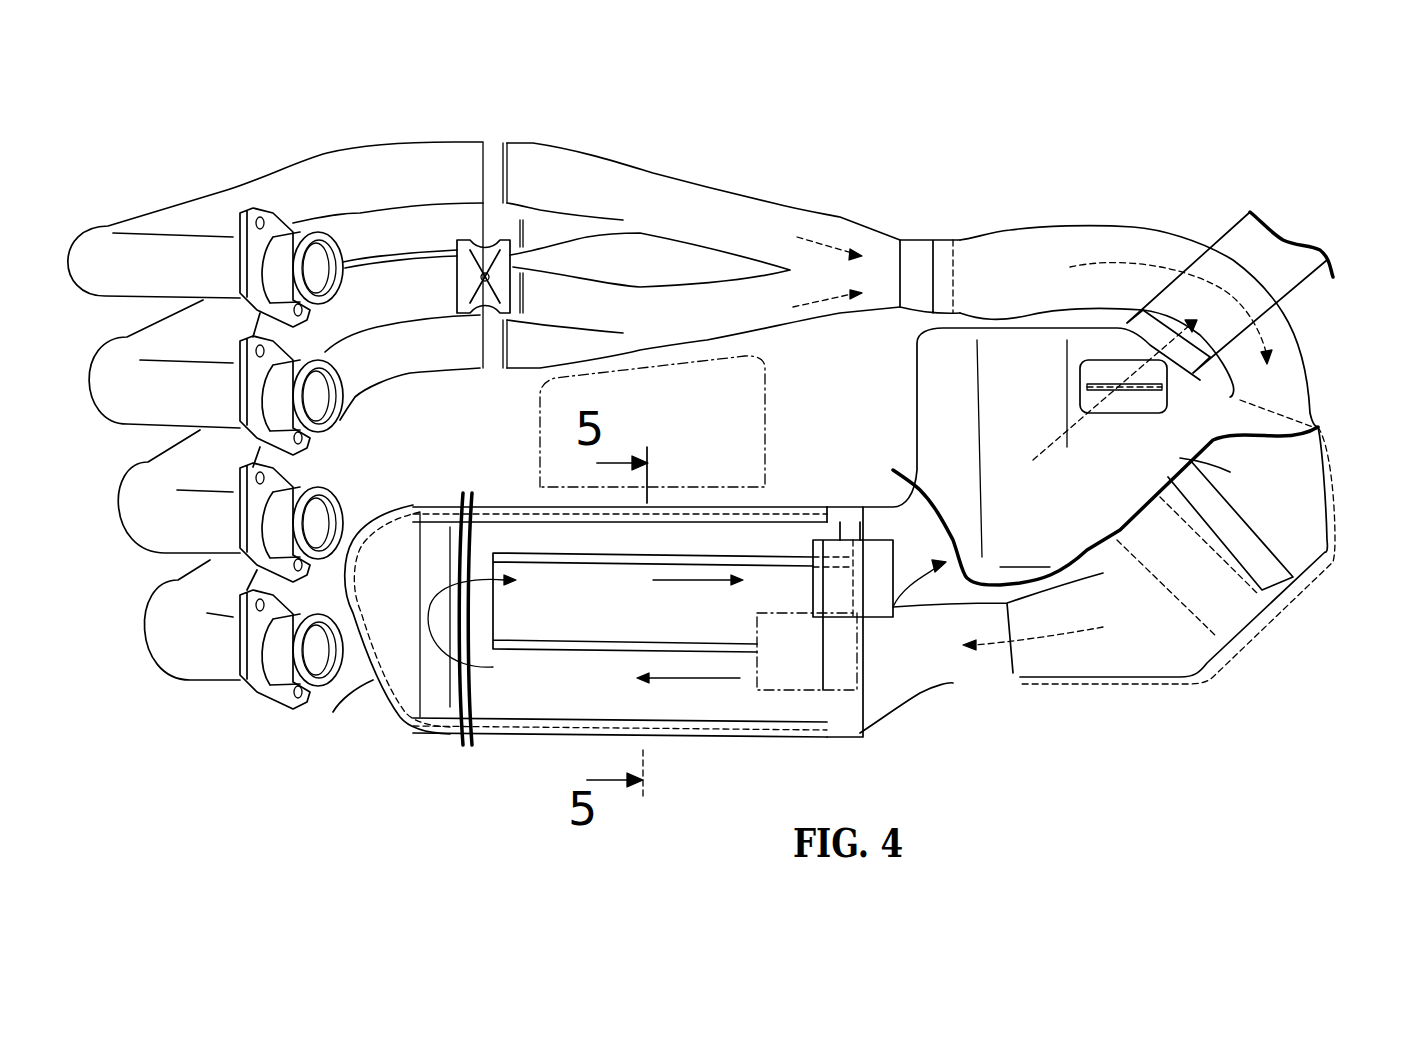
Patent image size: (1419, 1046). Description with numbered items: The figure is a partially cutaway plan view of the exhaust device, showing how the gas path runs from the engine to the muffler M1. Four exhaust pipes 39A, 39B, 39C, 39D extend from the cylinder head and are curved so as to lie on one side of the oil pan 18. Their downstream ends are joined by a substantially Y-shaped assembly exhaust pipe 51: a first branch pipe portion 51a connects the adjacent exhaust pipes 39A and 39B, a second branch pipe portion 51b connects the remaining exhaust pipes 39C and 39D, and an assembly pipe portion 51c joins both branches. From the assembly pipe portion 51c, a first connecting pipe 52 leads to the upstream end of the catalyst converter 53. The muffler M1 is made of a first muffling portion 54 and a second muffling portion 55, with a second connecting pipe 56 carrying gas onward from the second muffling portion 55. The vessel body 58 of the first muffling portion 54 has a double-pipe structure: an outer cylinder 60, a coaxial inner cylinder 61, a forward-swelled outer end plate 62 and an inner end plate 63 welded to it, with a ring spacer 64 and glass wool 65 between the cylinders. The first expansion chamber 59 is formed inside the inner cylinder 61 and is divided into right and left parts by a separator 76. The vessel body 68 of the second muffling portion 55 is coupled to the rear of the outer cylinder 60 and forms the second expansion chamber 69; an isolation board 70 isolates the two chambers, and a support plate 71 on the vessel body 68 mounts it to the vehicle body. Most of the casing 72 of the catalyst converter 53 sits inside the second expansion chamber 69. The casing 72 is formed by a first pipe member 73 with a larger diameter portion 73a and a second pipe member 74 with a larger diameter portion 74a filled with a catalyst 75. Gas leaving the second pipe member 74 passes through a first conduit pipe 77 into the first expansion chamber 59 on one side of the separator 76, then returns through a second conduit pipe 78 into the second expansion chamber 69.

The exhaust pipe 39A is at (253, 190).
The exhaust pipe 39B is at (360, 227).
The exhaust pipe 39C is at (377, 300).
The exhaust pipe 39D is at (307, 468).
The assembly exhaust pipe 51 is at (863, 212).
The first branch pipe portion 51a is at (577, 183).
The second branch pipe portion 51b is at (540, 348).
The assembly pipe portion 51c is at (887, 247).
The first connecting pipe 52 is at (1150, 243).
The second connecting pipe 56 is at (1237, 243).
The vessel body 68 is at (990, 343).
The support plate 71 is at (1090, 383).
The oil pan 18 is at (770, 410).
The vessel body 58 is at (775, 500).
The outer cylinder 60 is at (680, 507).
The separator 76 is at (721, 557).
The isolation board 70 is at (900, 477).
The second expansion chamber 69 is at (922, 515).
The casing 72 is at (1055, 468).
The first pipe member 73 is at (1180, 458).
The second pipe member 74 is at (1118, 567).
The inner cylinder 61 is at (553, 523).
The first expansion chamber 59 is at (560, 700).
The second conduit pipe 78 is at (895, 590).
The larger diameter portion 73a is at (1330, 557).
The catalyst 75 is at (1237, 603).
The larger diameter portion 74a is at (1247, 643).
The outer end plate 62 is at (370, 690).
The inner end plate 63 is at (390, 710).
The glass wool 65 is at (503, 730).
The muffler M1 is at (667, 745).
The first muffling portion 54 is at (715, 737).
The ring spacer 64 is at (800, 737).
The first conduit pipe 77 is at (880, 690).
The second muffling portion 55 is at (1068, 690).
The catalyst converter 53 is at (1208, 665).